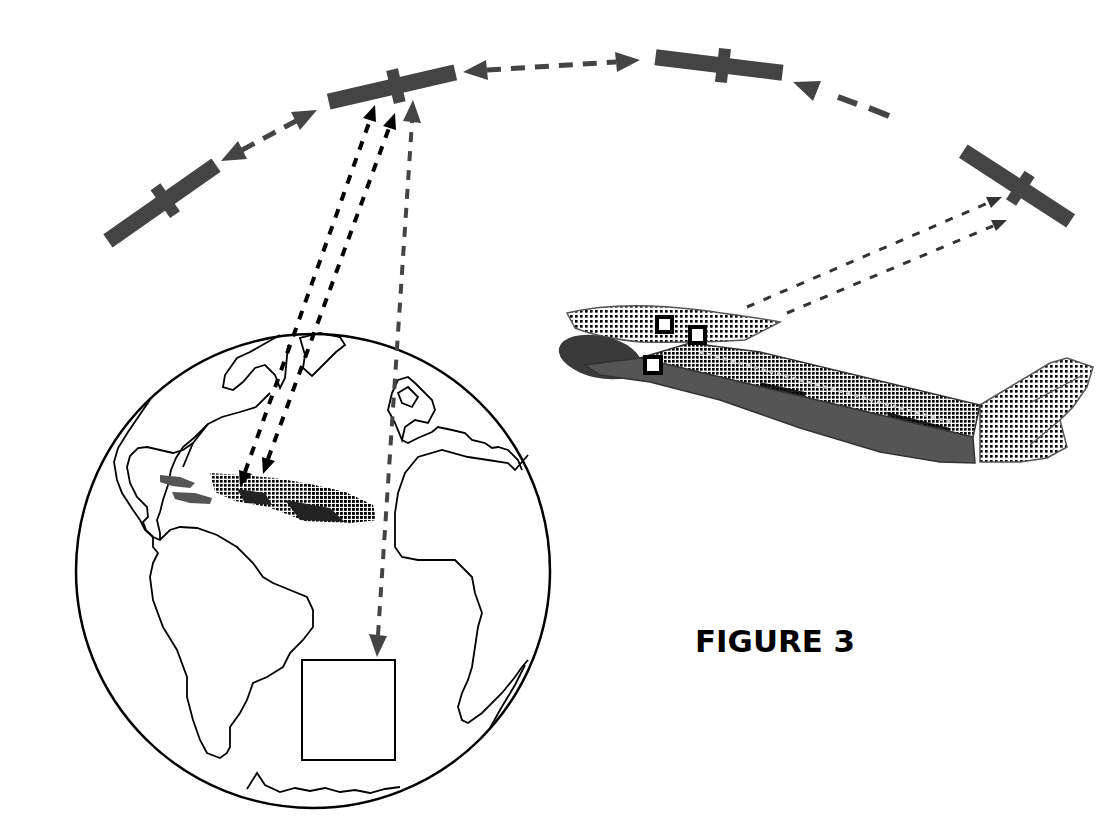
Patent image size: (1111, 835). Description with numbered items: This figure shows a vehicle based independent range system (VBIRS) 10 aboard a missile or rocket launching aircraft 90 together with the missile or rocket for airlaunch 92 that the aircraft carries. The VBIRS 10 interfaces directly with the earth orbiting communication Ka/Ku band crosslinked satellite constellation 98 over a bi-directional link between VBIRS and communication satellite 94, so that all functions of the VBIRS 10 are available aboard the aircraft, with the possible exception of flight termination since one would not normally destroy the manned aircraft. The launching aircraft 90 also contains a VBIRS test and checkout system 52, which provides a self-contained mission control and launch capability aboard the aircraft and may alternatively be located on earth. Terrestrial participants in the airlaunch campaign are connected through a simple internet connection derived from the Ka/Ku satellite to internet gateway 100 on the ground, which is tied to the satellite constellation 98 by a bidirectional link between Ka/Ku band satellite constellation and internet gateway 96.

The vehicle based independent range system (VBIRS) 10 is at (690, 310).
The VBIRS test and checkout system 52 is at (645, 301).
The missile or rocket launching aircraft 90 is at (1022, 412).
The missile or rocket for airlaunch 92 is at (704, 411).
The bi-directional link between VBIRS and communication satellite 94 is at (623, 296).
The bidirectional link between Ka/Ku band satellite constellation and internet gatew 96 is at (409, 378).
The earth orbiting communication Ka/Ku band crosslinked satellite constellation 98 is at (581, 143).
The Ka/Ku satellite to internet gateway 100 is at (366, 710).